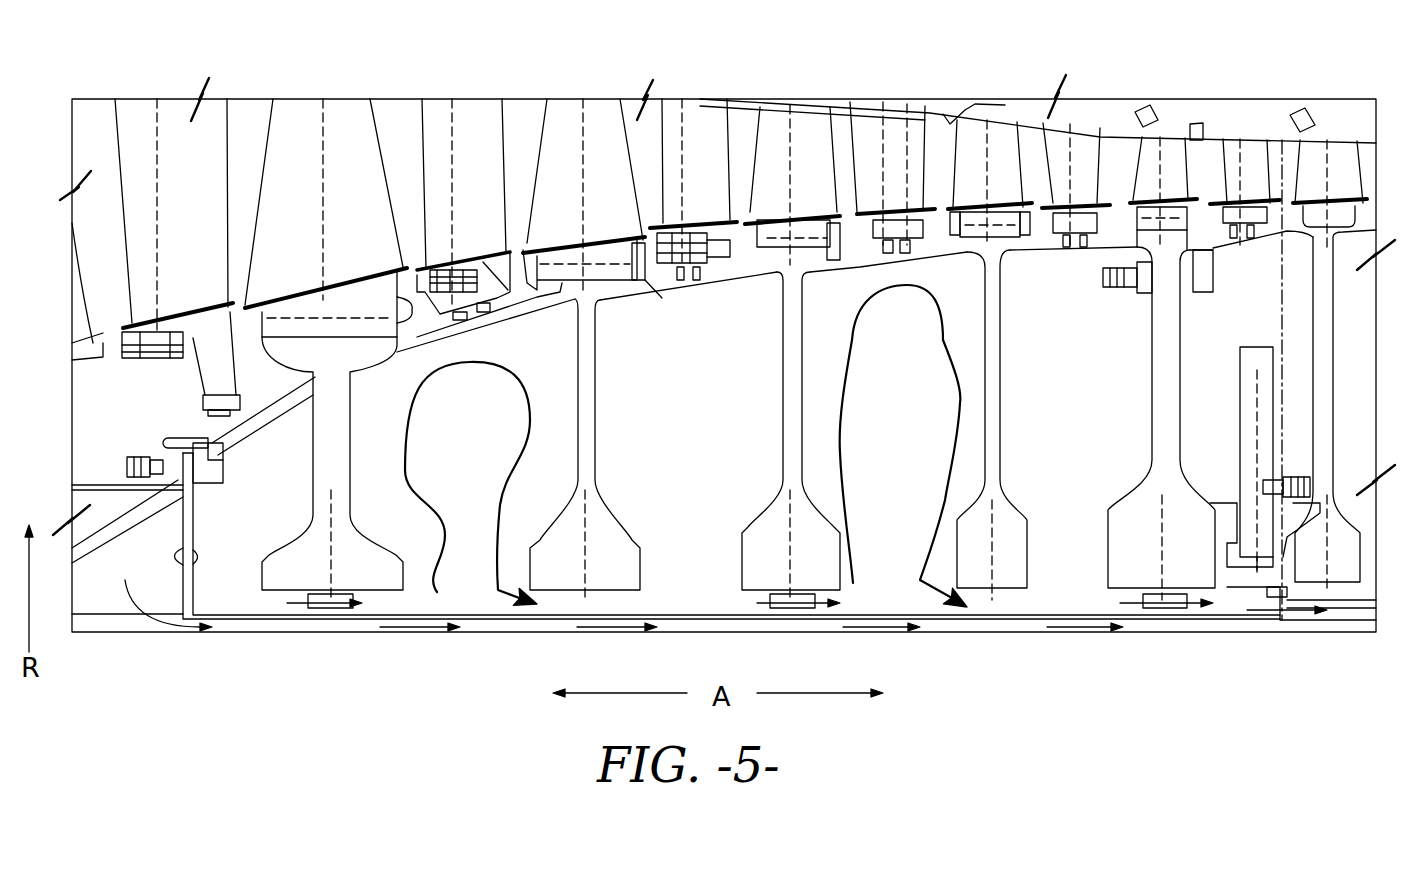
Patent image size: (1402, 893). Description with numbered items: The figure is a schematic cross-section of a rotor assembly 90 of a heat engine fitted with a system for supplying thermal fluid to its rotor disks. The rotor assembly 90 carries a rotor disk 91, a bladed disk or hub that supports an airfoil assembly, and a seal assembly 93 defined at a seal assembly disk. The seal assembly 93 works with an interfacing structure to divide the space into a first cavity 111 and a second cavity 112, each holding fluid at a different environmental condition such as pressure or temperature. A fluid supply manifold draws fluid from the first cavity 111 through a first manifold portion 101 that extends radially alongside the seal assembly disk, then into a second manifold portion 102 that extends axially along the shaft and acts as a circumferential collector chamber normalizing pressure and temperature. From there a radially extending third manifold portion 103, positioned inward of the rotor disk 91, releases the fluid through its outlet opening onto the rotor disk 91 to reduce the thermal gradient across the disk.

The rotor assembly 90 is at (845, 79).
The rotor disk 91 is at (305, 547).
The seal assembly 93 is at (205, 423).
The first manifold portion 101 is at (215, 530).
The second manifold portion 102 is at (260, 610).
The third manifold portion 103 is at (355, 597).
The first cavity 111 is at (128, 430).
The second cavity 112 is at (300, 466).